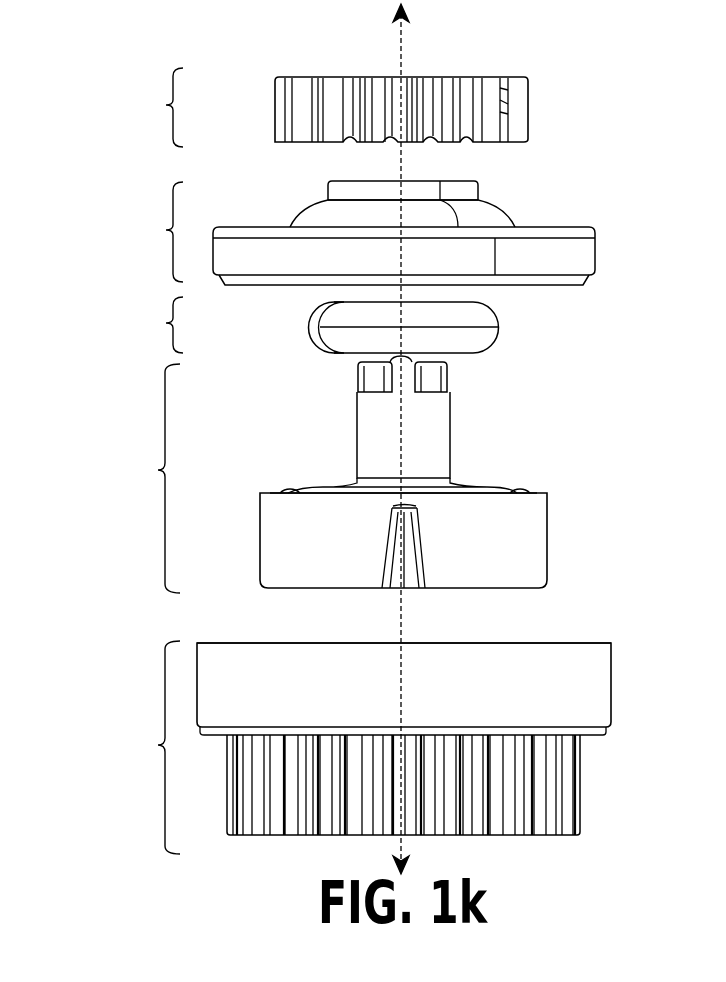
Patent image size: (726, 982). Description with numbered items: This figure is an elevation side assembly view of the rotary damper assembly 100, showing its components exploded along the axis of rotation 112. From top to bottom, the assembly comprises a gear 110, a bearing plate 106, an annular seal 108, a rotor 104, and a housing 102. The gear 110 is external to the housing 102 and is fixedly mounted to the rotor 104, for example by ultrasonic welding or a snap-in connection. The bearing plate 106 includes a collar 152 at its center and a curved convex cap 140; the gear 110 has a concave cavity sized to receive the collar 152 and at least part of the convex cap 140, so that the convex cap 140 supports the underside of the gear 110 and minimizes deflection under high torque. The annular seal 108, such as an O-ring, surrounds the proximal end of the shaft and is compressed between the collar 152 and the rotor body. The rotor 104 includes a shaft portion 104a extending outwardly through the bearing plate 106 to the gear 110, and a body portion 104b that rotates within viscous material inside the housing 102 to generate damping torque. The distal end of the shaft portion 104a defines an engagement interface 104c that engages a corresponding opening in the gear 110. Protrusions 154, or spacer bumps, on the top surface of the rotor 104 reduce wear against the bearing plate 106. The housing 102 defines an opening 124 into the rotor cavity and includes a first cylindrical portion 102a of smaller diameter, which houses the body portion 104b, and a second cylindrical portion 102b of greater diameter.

The rotary damper assembly 100 is at (619, 65).
The gear 110 is at (151, 107).
The axis of rotation 112 is at (399, 34).
The bearing plate 106 is at (358, 222).
The collar 152 is at (480, 190).
The convex cap 140 is at (508, 214).
The annular seal 108 is at (309, 325).
The rotor 104 is at (381, 473).
The shaft portion 104a is at (450, 430).
The body portion 104b is at (547, 545).
The engagement interface 104c is at (450, 384).
The protrusions 154 is at (517, 492).
The opening 124 is at (548, 638).
The housing 102 is at (411, 718).
The first cylindrical portion 102a is at (575, 793).
The second cylindrical portion 102b is at (608, 680).